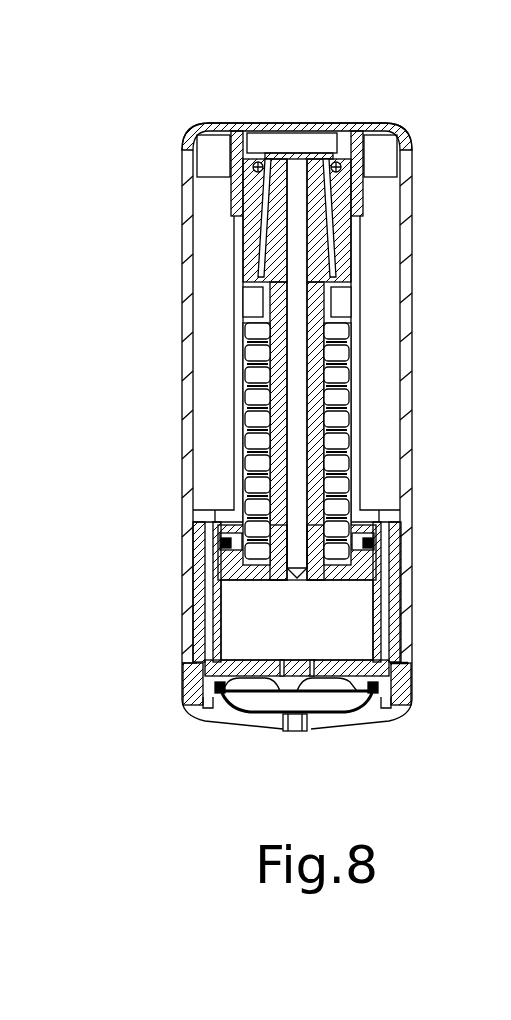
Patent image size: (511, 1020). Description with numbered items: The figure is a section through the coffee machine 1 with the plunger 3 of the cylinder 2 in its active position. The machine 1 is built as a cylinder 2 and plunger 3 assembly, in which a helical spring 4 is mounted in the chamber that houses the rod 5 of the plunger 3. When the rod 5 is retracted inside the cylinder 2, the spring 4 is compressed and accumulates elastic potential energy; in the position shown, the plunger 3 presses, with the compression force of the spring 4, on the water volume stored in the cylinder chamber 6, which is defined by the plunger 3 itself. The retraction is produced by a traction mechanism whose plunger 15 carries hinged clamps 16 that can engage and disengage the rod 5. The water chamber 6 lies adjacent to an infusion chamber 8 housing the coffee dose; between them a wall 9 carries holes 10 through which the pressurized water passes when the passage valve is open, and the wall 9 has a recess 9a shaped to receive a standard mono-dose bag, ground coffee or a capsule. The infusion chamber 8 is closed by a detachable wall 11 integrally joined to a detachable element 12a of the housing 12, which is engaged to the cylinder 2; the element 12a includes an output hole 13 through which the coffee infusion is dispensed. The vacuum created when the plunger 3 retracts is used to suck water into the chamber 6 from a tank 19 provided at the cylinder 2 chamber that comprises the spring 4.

The machine 1 is at (441, 152).
The cylinder 2 is at (193, 620).
The plunger 3 is at (365, 578).
The helical spring 4 is at (332, 465).
The rod 5 is at (323, 402).
The cylinder chamber 6 is at (255, 613).
The infusion chamber 8 is at (335, 711).
The wall 9 is at (222, 685).
The recess 9a is at (410, 668).
The holes 10 is at (266, 711).
The detachable wall 11 is at (320, 727).
The housing 12 is at (183, 382).
The detachable element 12a is at (383, 722).
The output hole 13 is at (305, 731).
The plunger of the traction mechanism 15 is at (343, 153).
The clamps 16 is at (263, 210).
The tank 19 is at (380, 310).